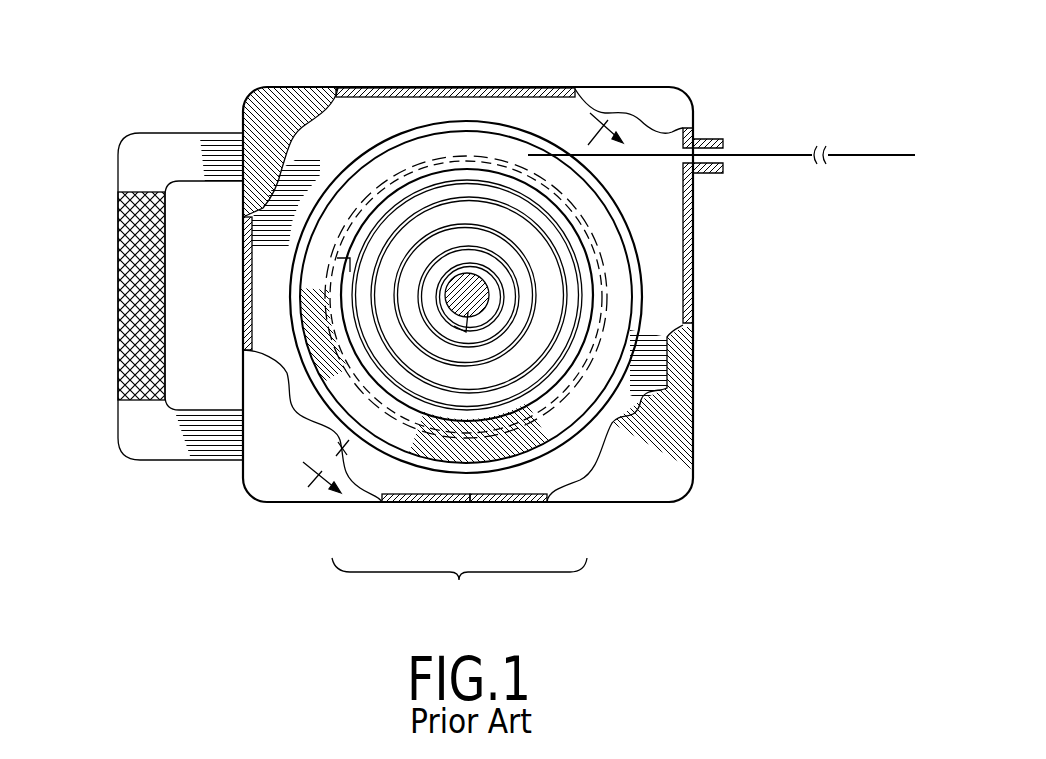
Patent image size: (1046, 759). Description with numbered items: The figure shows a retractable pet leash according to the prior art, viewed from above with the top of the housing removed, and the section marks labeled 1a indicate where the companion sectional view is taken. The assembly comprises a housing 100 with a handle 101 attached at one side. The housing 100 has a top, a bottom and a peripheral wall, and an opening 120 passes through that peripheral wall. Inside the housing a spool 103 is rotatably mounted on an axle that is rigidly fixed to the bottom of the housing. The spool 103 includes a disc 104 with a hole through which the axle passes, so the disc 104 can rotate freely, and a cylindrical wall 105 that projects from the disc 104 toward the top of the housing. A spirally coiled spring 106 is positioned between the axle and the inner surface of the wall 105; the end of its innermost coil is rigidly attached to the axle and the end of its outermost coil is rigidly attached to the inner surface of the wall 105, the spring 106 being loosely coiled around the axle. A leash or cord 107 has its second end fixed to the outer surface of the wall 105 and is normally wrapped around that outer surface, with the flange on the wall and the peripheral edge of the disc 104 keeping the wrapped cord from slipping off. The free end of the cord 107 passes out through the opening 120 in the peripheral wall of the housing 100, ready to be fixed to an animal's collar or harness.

The housing 100 is at (362, 88).
The handle 101 is at (118, 299).
The spool 103 is at (459, 588).
The disc 104 is at (402, 503).
The cylindrical wall 105 is at (523, 501).
The spirally coiled spring 106 is at (483, 192).
The cord 107 is at (767, 152).
The opening 120 is at (724, 158).
The section line 1a is at (449, 300).